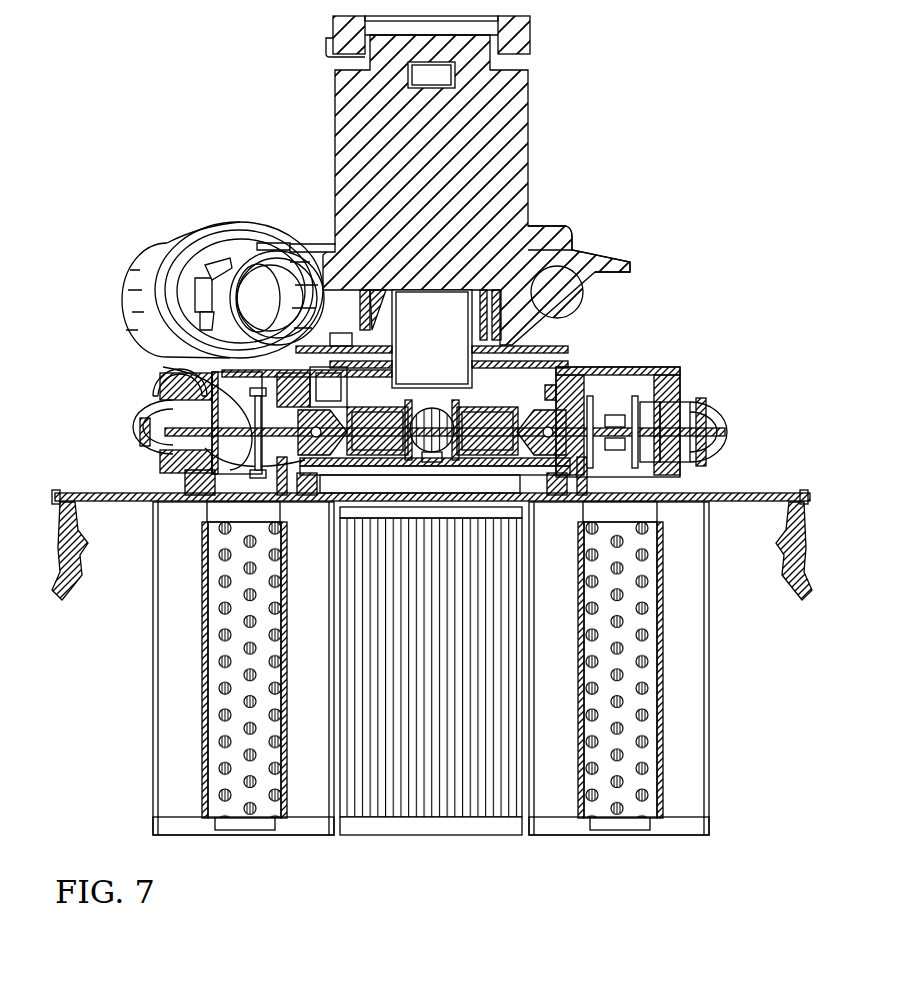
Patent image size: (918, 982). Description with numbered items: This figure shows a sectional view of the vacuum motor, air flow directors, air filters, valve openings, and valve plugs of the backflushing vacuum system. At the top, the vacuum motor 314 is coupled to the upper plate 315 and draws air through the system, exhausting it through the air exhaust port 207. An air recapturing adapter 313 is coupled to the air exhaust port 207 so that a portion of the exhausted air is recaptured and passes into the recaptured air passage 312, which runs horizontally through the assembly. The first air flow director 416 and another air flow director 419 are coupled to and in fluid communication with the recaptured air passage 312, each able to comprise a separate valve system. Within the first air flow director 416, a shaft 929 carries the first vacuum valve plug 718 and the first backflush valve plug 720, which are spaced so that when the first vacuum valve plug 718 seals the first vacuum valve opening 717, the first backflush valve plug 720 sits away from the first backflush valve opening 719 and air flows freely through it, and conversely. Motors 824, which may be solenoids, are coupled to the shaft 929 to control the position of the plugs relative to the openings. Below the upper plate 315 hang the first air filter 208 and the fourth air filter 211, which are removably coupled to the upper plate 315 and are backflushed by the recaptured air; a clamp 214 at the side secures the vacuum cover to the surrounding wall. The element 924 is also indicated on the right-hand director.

The air exhaust port 207 is at (132, 272).
The first air filter 208 is at (215, 765).
The fourth air filter 211 is at (662, 770).
The clamp 214 is at (800, 585).
The recaptured air passage 312 is at (140, 438).
The air recapturing adapter 313 is at (272, 244).
The vacuum motor 314 is at (530, 232).
The upper plate 315 is at (712, 492).
The first air flow director 416 is at (165, 368).
The air flow director 419 is at (640, 368).
The first vacuum valve opening 717 is at (210, 478).
The first vacuum valve plug 718 is at (175, 458).
The first backflush valve opening 719 is at (168, 415).
The first backflush valve plug 720 is at (157, 387).
The motor 824 is at (560, 390).
The bearing 924 is at (652, 430).
The shaft 929 is at (163, 374).